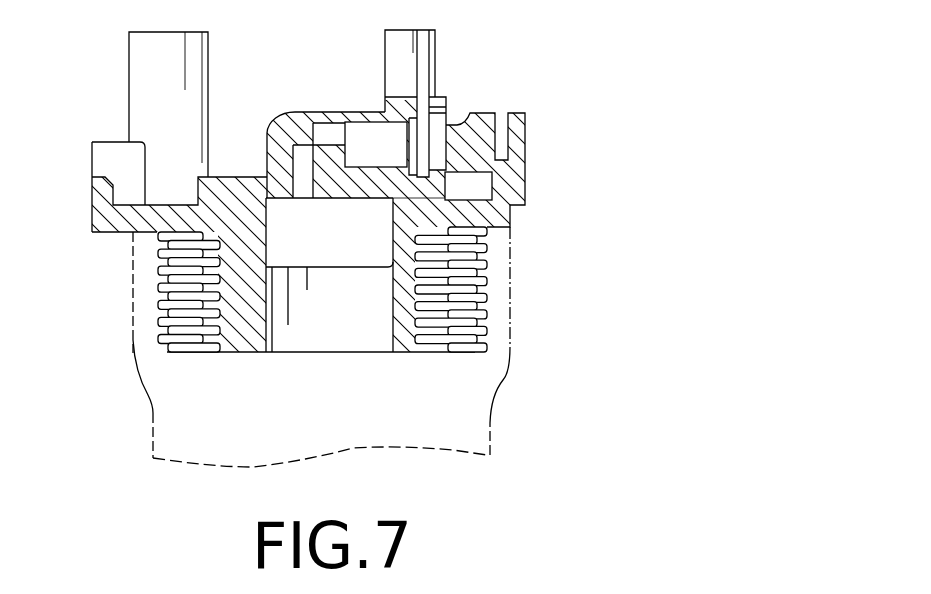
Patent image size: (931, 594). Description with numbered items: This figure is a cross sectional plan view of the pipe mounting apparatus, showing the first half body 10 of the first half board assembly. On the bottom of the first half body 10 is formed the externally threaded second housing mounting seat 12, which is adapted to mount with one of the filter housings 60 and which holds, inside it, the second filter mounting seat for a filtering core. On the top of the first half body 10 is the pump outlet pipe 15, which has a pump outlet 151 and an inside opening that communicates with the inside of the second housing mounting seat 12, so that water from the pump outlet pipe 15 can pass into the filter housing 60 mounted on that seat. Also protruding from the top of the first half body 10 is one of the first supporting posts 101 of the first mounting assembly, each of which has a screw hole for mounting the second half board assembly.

The first half body 10 is at (507, 212).
The second housing mounting seat 12 is at (488, 284).
The pump outlet pipe 15 is at (330, 116).
The first supporting post 101 is at (436, 36).
The pump outlet 151 is at (432, 144).
The filter housing 60 is at (493, 370).